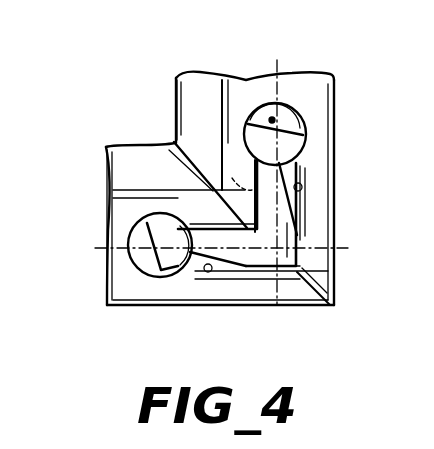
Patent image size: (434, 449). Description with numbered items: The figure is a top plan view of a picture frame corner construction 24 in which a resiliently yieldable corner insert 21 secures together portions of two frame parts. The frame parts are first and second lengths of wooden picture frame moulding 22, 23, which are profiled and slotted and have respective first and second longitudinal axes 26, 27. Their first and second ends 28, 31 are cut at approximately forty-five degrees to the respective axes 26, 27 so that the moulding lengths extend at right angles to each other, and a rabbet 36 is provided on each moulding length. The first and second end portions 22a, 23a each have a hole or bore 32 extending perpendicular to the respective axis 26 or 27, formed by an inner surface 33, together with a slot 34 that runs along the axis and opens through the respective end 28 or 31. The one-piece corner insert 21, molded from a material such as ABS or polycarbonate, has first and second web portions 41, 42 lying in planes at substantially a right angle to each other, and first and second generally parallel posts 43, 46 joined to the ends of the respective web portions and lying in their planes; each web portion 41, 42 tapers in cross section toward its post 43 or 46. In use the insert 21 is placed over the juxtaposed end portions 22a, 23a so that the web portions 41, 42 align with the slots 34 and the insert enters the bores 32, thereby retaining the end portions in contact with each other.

The picture frame corner wedge or insert 21 is at (273, 248).
The first length of picture frame moulding 22 is at (243, 66).
The first end portion 22a is at (337, 93).
The second length of picture frame moulding 23 is at (97, 206).
The second end portion 23a is at (120, 310).
The picture frame corner construction 24 is at (104, 78).
The first longitudinal axis 26 is at (237, 173).
The second longitudinal axis 27 is at (226, 212).
The first end 28 is at (318, 305).
The second end 31 is at (188, 152).
The hole or bore 32 is at (238, 116).
The inner surface 33 is at (285, 108).
The slot 34 is at (304, 191).
The rabbet 36 is at (188, 85).
The first web portion 41 is at (303, 220).
The second web portion 42 is at (243, 268).
The first outer portion or post 43 is at (294, 140).
The second outer portion or post 46 is at (168, 278).